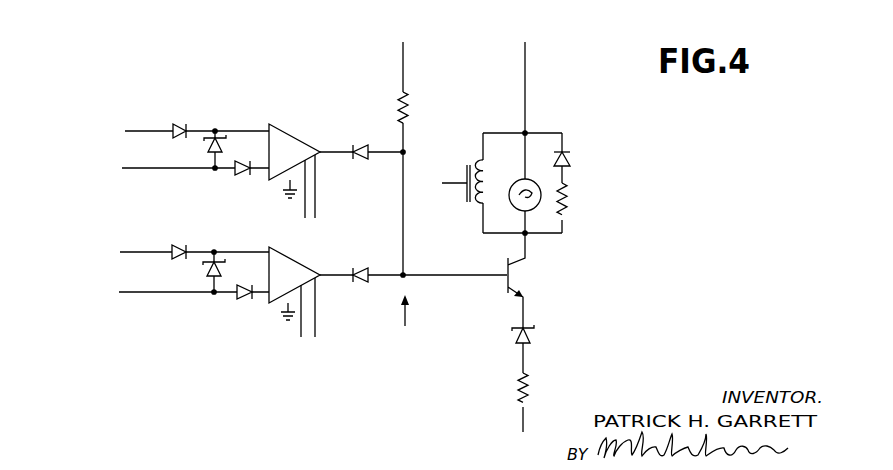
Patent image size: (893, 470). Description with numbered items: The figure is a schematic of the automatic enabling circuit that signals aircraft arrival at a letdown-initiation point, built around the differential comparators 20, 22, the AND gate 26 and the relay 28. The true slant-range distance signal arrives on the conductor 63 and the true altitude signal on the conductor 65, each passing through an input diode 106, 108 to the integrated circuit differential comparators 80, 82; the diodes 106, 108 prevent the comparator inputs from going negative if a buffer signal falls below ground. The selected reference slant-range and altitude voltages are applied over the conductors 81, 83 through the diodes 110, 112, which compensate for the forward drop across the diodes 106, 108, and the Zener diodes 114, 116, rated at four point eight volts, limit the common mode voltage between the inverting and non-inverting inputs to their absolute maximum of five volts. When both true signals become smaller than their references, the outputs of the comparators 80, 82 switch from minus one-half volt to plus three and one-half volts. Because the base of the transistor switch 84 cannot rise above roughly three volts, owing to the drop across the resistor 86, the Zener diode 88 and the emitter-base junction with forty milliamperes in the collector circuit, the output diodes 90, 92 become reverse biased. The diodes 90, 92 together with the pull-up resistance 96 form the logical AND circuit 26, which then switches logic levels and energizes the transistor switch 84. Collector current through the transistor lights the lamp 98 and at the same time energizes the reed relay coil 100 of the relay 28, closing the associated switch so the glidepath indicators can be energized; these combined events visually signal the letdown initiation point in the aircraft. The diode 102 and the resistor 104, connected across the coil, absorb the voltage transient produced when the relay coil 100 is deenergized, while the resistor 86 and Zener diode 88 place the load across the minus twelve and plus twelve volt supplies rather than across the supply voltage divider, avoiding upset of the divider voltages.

The differential comparator 20 is at (282, 97).
The differential comparator 22 is at (234, 332).
The AND gate 26 is at (407, 327).
The relay 28 is at (467, 234).
The conductor 63 is at (125, 131).
The conductor 65 is at (122, 253).
The integrated circuit differential comparator 80 is at (290, 136).
The conductor 81 is at (155, 170).
The integrated circuit differential comparator 82 is at (298, 264).
The conductor 83 is at (150, 294).
The transistor switch 84 is at (500, 289).
The resistor 86 is at (519, 393).
The Zener diode 88 is at (513, 341).
The diode 90 is at (378, 119).
The diode 92 is at (364, 284).
The resistance 96 is at (402, 93).
The lamp 98 is at (517, 179).
The reed relay coil 100 is at (478, 159).
The diode 102 is at (572, 152).
The resistor 104 is at (568, 219).
The diode 106 is at (179, 122).
The diode 108 is at (171, 246).
The diode 110 is at (235, 171).
The diode 112 is at (232, 295).
The Zener diode 114 is at (205, 146).
The Zener diode 116 is at (205, 268).